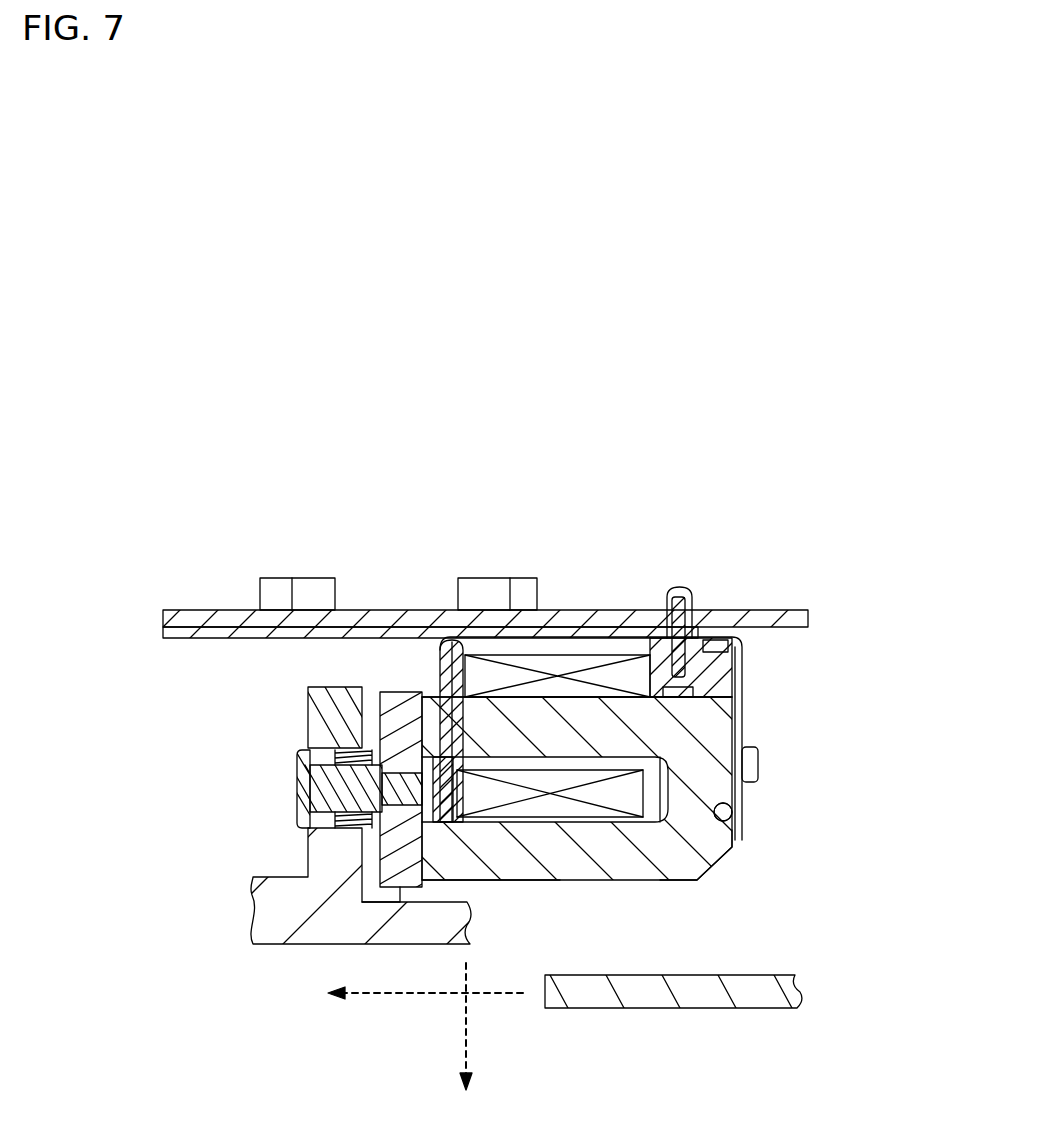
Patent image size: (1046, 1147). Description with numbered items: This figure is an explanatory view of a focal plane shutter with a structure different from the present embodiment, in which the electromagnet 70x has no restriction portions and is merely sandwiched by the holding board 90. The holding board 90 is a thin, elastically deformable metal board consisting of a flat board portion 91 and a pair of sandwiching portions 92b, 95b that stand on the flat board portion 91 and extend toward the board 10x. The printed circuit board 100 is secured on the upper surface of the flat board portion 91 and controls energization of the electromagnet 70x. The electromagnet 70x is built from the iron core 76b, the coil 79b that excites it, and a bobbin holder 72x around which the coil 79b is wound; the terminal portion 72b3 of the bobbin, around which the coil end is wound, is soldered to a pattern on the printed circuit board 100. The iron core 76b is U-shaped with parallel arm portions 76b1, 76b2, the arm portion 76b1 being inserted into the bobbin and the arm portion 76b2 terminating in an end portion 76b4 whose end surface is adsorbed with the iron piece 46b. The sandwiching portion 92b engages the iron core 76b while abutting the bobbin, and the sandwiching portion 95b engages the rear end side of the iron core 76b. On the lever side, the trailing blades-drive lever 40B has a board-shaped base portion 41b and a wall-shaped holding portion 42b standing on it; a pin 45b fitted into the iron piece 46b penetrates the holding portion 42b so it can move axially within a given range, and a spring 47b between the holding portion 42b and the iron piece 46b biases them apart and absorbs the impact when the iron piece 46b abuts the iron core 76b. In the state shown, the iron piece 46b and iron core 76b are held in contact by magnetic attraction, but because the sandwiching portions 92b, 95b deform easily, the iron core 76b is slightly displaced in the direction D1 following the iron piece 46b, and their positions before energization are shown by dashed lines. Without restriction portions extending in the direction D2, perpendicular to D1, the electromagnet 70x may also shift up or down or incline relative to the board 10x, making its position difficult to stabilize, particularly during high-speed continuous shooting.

The printed circuit board 100 is at (770, 610).
The holding board 90 is at (243, 637).
The flat board portion 91 is at (283, 633).
The electromagnet 70x is at (775, 707).
The sandwiching portion 92b is at (448, 700).
The holder 72x is at (743, 660).
The terminal portion 72b3 is at (677, 587).
The coil 79b is at (558, 680).
The iron core 76b is at (607, 720).
The arm portion 76b1 is at (498, 730).
The arm portion 76b2 is at (680, 850).
The end portion 76b4 is at (460, 857).
The sandwiching portion 95b is at (735, 803).
The iron piece 46b is at (397, 727).
The holding portion 42b is at (332, 697).
The pin 45b is at (297, 780).
The spring 47b is at (338, 748).
The trailing blades-drive lever 40B is at (382, 953).
The base portion 41b is at (312, 944).
The board 10x is at (687, 1008).
The direction D1 is at (388, 993).
The direction D2 is at (466, 1020).